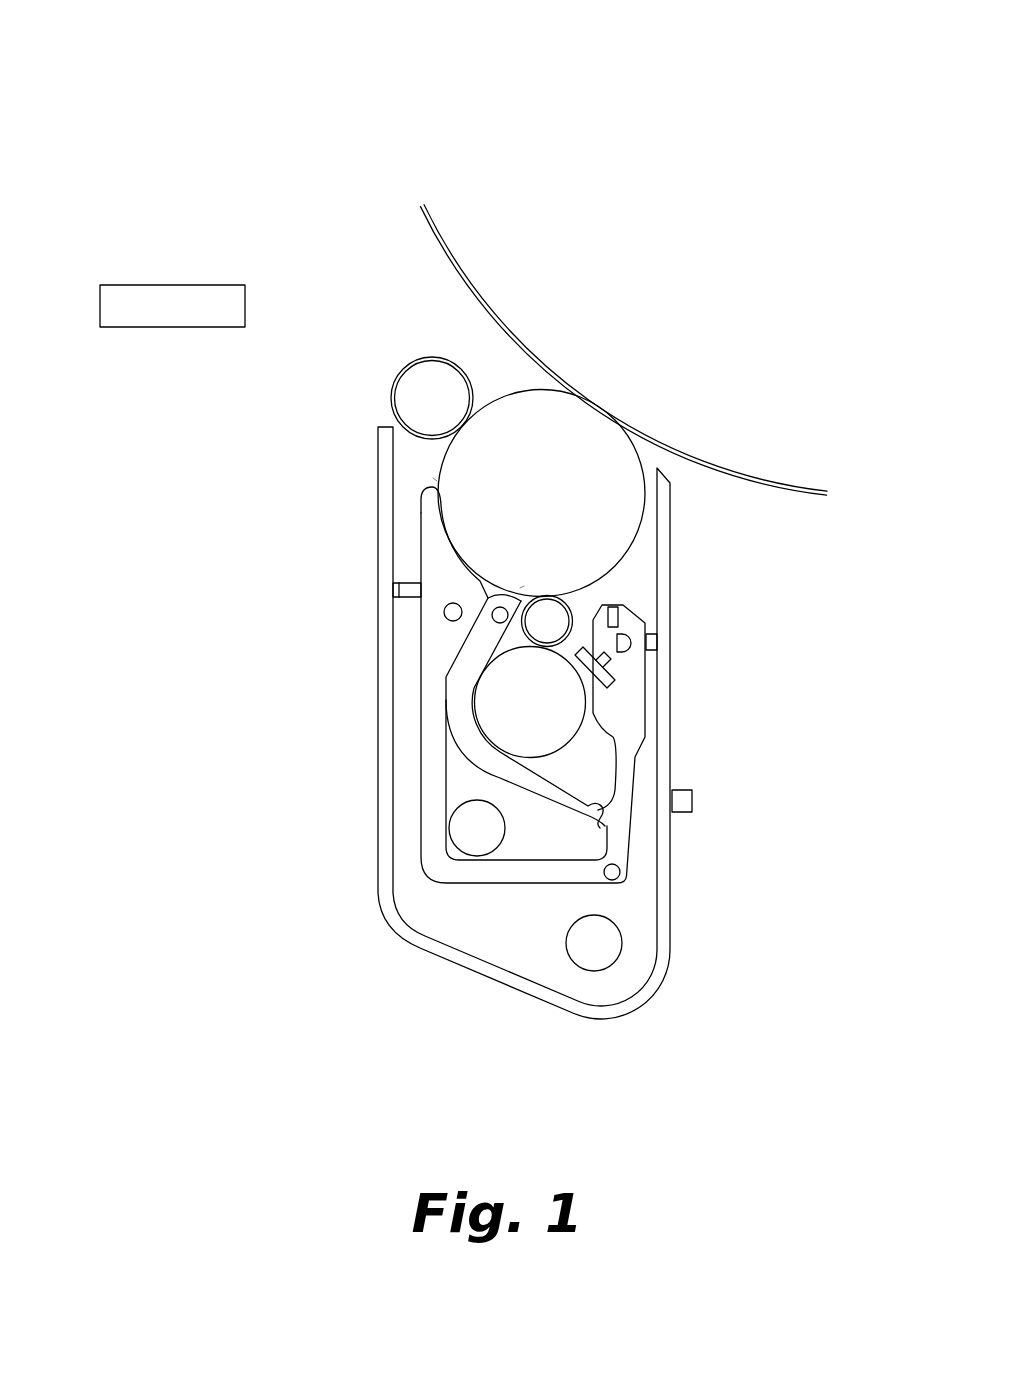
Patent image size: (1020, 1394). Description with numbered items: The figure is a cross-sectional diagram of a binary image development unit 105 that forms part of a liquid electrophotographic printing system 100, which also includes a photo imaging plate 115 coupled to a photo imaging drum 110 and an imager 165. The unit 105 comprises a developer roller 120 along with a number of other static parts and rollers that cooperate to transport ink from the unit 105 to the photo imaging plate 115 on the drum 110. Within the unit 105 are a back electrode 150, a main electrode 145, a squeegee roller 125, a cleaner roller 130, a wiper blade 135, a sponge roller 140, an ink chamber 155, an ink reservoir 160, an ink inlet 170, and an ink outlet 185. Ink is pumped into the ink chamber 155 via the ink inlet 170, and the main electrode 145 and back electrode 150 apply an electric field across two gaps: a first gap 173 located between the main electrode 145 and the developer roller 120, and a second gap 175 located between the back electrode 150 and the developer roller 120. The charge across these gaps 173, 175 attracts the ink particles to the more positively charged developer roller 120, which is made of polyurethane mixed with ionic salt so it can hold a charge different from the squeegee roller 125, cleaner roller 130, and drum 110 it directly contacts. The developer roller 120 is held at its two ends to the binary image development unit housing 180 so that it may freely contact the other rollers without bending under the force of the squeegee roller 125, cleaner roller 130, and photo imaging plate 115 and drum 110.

The liquid electrophotographic printing system 100 is at (192, 53).
The binary image development unit 105 is at (298, 478).
The photo imaging drum 110 is at (626, 350).
The photo imaging plate 115 is at (425, 223).
The developer roller 120 is at (520, 508).
The squeegee roller 125 is at (422, 378).
The cleaner roller 130 is at (556, 620).
The wiper blade 135 is at (573, 652).
The sponge roller 140 is at (553, 710).
The main electrode 145 is at (435, 558).
The back electrode 150 is at (467, 690).
The ink chamber 155 is at (463, 771).
The ink reservoir 160 is at (461, 948).
The imager 165 is at (154, 320).
The ink inlet 170 is at (472, 840).
The first gap 173 is at (430, 476).
The second gap 175 is at (528, 583).
The binary image development unit housing 180 is at (664, 873).
The ink outlet 185 is at (603, 953).